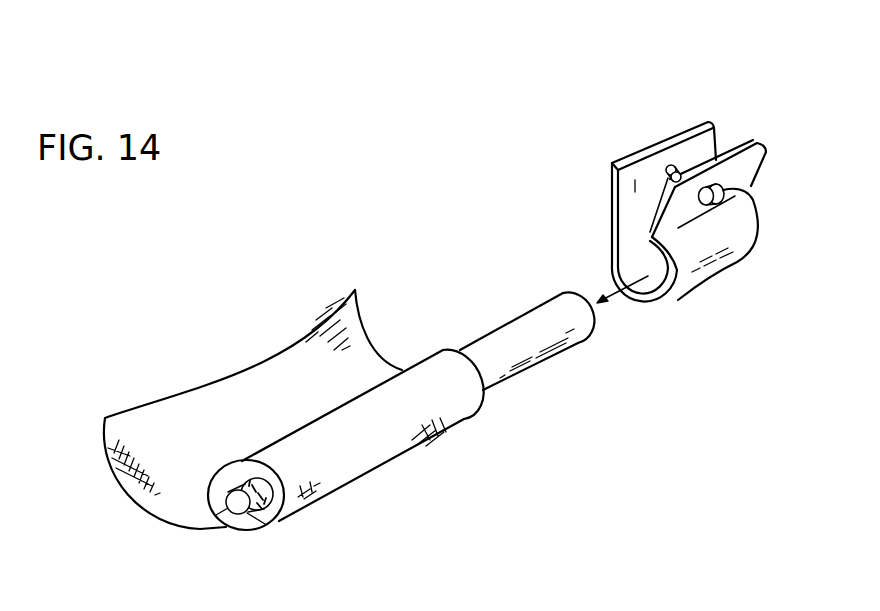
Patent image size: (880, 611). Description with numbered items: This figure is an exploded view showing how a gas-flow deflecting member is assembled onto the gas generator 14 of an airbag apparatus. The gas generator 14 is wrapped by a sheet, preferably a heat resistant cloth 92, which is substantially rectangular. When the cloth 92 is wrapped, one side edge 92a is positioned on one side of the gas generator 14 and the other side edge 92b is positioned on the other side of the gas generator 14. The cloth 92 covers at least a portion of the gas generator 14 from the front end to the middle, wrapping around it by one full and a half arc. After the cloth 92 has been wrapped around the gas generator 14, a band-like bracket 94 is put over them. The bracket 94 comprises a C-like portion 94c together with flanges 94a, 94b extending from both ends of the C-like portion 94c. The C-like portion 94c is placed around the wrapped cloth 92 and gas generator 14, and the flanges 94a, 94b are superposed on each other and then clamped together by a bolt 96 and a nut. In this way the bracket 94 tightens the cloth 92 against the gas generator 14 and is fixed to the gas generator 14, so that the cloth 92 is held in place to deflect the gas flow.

The gas generator 14 is at (520, 352).
The heat resistant cloth 92 is at (347, 455).
The one side edge 92a is at (219, 520).
The other side edge 92b is at (153, 403).
The band-like bracket 94 is at (659, 241).
The flange 94a is at (754, 140).
The flange 94b is at (634, 182).
The C-like portion 94c is at (730, 247).
The bolt 96 is at (752, 192).